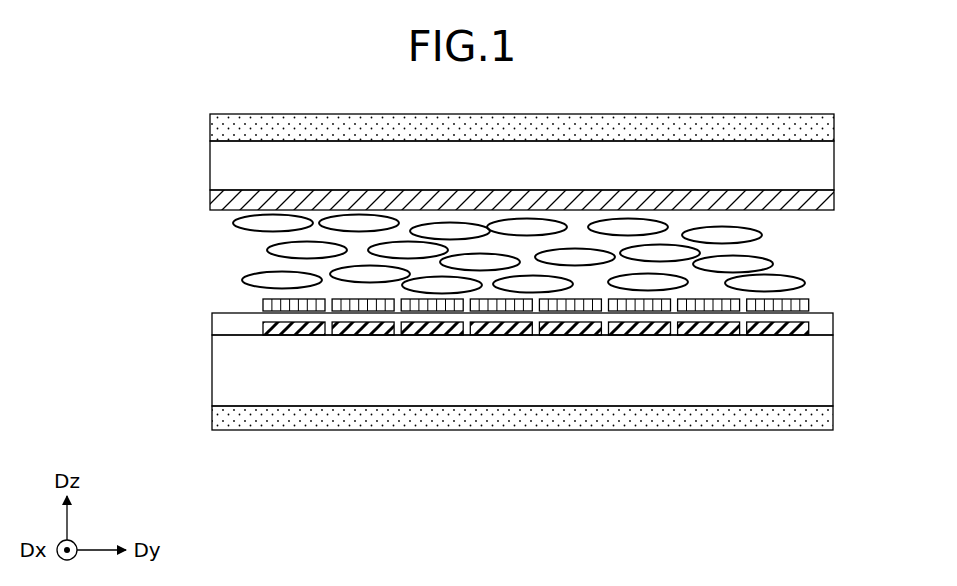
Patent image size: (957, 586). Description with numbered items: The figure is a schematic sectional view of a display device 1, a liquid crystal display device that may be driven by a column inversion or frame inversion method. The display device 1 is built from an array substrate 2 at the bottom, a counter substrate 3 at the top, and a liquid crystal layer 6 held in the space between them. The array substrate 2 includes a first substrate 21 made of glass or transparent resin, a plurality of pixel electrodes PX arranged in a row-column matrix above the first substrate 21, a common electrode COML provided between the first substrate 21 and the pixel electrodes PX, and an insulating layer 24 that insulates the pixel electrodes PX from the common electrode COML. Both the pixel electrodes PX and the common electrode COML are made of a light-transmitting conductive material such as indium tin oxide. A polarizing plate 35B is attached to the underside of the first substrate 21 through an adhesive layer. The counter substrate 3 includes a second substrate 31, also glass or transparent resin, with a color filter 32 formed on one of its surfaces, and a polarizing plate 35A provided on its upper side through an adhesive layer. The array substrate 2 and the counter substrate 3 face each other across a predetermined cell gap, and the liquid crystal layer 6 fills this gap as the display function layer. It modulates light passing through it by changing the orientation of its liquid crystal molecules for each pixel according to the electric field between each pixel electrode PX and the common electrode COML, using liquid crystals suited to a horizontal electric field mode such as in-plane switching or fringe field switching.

The display device 1 is at (520, 443).
The array substrate 2 is at (93, 295).
The counter substrate 3 is at (102, 115).
The liquid crystal layer 6 is at (200, 266).
The first substrate 21 is at (228, 380).
The insulating layer 24 is at (822, 322).
The second substrate 31 is at (222, 166).
The color filter 32 is at (222, 200).
The polarizing plate 35A is at (222, 130).
The polarizing plate 35B is at (227, 417).
The pixel electrode PX is at (263, 304).
The common electrode COML is at (263, 331).